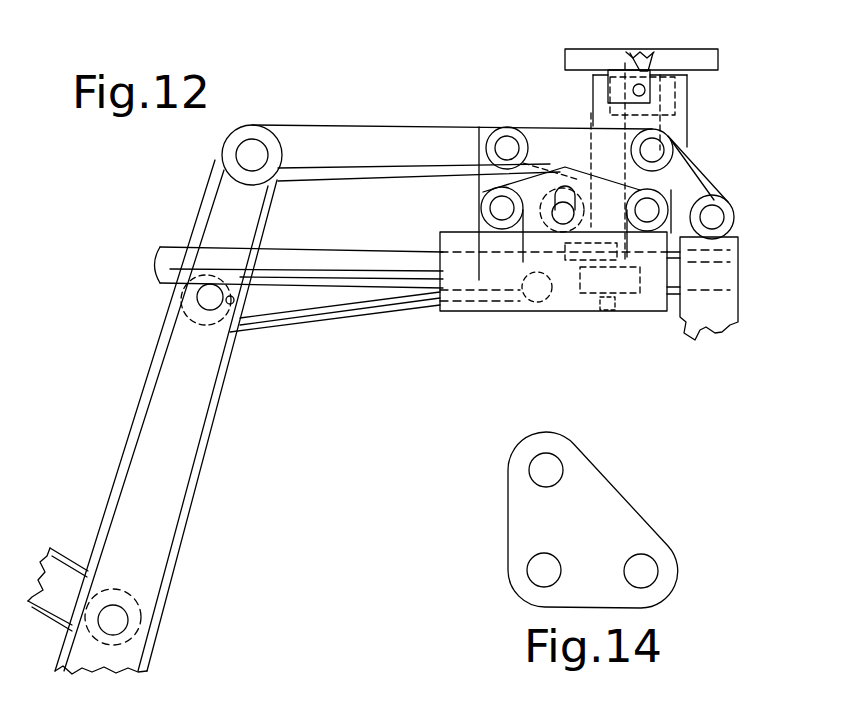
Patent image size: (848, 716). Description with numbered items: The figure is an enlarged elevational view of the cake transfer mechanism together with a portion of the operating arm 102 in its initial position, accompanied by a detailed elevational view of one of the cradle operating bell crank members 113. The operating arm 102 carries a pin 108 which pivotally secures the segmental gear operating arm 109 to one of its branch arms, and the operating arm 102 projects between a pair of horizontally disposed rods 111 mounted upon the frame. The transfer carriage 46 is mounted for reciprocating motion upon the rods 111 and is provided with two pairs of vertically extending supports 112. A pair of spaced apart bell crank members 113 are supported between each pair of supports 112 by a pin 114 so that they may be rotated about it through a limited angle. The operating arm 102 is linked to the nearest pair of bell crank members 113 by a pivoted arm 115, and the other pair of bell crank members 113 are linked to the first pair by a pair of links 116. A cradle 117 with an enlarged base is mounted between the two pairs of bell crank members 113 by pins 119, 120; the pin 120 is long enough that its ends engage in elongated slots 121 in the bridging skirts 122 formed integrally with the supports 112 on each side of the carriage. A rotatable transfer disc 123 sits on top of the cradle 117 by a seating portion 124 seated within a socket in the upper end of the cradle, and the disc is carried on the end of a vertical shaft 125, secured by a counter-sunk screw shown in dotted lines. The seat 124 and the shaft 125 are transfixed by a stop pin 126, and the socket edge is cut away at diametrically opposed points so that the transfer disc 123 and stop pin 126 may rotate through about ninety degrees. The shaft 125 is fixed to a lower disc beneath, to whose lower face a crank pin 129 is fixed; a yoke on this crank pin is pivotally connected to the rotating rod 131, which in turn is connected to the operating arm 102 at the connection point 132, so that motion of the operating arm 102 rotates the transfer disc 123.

In FIG. 12, the transfer carriage 46 is at (589, 297).
In FIG. 12, the operating arm 102 is at (158, 515).
In FIG. 12, the pin 108 is at (113, 620).
In FIG. 12, the segmental gear operating arm 109 is at (53, 570).
In FIG. 12, the rods 111 is at (287, 268).
In FIG. 12, the supports 112 is at (488, 235).
In FIG. 12, the bell crank members 113 is at (487, 177).
In FIG. 14, the bell crank members 113 is at (531, 520).
In FIG. 12, the pin 114 is at (502, 207).
In FIG. 12, the pivoted arm 115 is at (347, 140).
In FIG. 12, the links 116 is at (549, 138).
In FIG. 12, the cradle 117 is at (677, 128).
In FIG. 12, the pin 119 is at (711, 218).
In FIG. 12, the pin 120 is at (565, 215).
In FIG. 12, the elongated slots 121 is at (562, 195).
In FIG. 12, the bridging skirts 122 is at (533, 203).
In FIG. 12, the transfer disc 123 is at (697, 62).
In FIG. 12, the seating portion 124 is at (622, 95).
In FIG. 12, the vertical shaft 125 is at (657, 63).
In FIG. 12, the stop pin 126 is at (633, 90).
In FIG. 12, the crank pin 129 is at (602, 280).
In FIG. 12, the rotating rod 131 is at (335, 308).
In FIG. 12, the connection point 132 is at (193, 297).